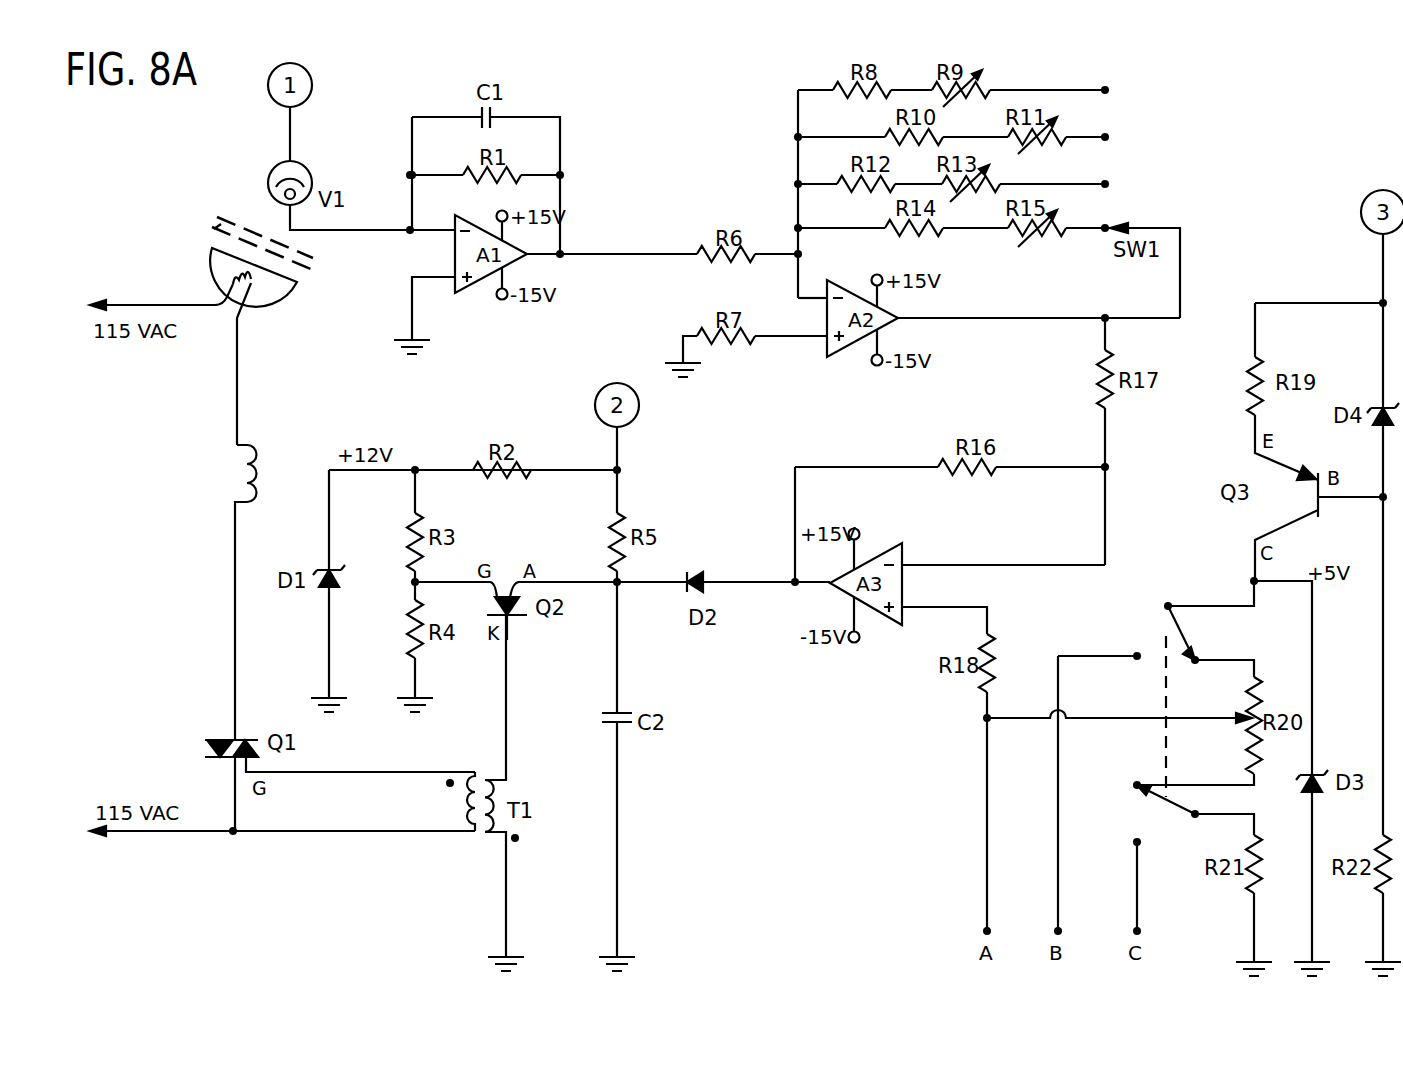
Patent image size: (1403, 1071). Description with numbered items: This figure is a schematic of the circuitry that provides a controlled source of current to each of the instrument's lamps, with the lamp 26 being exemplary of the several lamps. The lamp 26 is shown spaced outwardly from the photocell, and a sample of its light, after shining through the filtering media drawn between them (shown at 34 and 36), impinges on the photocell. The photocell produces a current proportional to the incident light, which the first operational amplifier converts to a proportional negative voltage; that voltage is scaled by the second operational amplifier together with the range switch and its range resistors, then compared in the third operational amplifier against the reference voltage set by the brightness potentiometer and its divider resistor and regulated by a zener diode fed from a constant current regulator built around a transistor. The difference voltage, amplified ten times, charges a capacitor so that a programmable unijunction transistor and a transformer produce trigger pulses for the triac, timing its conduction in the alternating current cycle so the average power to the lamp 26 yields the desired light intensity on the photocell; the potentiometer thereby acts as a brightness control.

The lamp 26 is at (272, 292).
The chopper 34 is at (214, 229).
The filter 36 is at (227, 214).